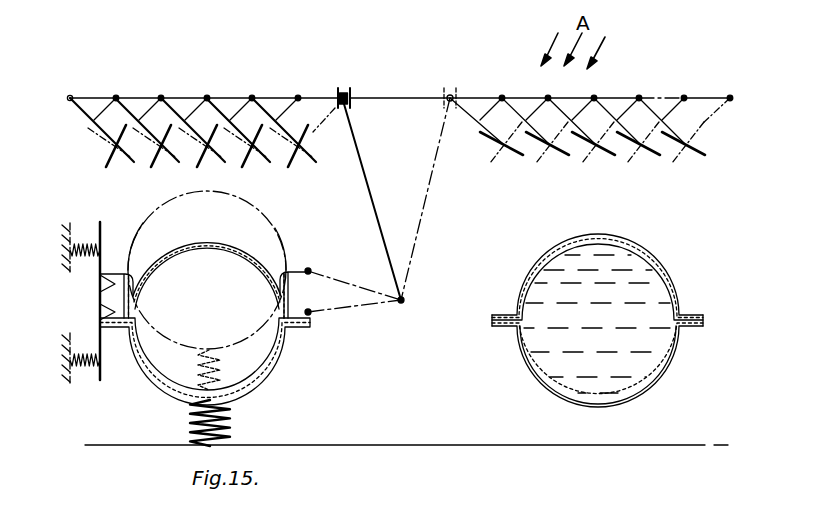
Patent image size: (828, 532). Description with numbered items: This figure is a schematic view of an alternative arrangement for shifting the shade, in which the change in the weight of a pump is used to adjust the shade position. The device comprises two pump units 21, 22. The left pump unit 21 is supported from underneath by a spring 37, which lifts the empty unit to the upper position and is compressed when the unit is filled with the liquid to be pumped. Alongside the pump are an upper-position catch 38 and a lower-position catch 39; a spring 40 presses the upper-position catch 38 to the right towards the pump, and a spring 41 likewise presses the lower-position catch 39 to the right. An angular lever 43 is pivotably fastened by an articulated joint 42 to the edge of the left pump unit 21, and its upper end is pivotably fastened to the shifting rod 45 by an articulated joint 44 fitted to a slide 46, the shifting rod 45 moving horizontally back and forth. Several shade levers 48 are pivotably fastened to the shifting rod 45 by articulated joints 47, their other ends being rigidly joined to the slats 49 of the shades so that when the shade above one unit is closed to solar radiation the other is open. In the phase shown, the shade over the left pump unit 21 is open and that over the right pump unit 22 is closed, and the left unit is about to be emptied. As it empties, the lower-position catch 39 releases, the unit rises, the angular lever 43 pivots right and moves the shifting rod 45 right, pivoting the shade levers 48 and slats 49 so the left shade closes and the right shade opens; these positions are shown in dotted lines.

The left pump unit 21 is at (278, 366).
The right pump unit 22 is at (665, 367).
The spring 37 is at (222, 415).
The upper-position catch 38 is at (98, 284).
The lower-position catch 39 is at (98, 313).
The spring 40 is at (87, 242).
The spring 41 is at (85, 368).
The articulated joint 42 is at (311, 312).
The angular lever 43 is at (373, 208).
The articulated joint 44 is at (349, 88).
The shifting rod 45 is at (402, 98).
The slide 46 is at (338, 96).
The articulated joints 47 is at (71, 97).
The shade levers 48 is at (80, 112).
The slats 49 is at (107, 164).